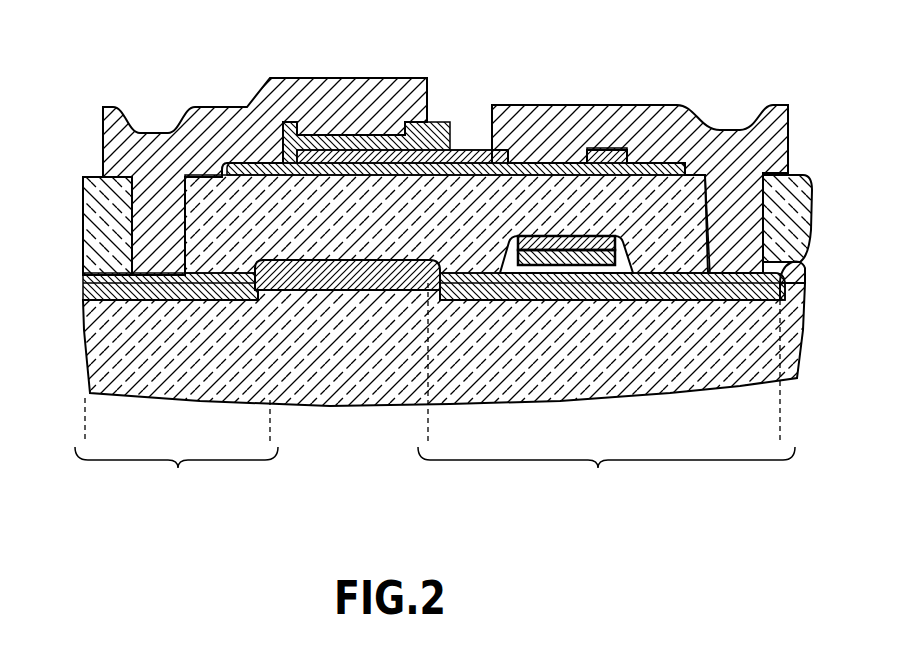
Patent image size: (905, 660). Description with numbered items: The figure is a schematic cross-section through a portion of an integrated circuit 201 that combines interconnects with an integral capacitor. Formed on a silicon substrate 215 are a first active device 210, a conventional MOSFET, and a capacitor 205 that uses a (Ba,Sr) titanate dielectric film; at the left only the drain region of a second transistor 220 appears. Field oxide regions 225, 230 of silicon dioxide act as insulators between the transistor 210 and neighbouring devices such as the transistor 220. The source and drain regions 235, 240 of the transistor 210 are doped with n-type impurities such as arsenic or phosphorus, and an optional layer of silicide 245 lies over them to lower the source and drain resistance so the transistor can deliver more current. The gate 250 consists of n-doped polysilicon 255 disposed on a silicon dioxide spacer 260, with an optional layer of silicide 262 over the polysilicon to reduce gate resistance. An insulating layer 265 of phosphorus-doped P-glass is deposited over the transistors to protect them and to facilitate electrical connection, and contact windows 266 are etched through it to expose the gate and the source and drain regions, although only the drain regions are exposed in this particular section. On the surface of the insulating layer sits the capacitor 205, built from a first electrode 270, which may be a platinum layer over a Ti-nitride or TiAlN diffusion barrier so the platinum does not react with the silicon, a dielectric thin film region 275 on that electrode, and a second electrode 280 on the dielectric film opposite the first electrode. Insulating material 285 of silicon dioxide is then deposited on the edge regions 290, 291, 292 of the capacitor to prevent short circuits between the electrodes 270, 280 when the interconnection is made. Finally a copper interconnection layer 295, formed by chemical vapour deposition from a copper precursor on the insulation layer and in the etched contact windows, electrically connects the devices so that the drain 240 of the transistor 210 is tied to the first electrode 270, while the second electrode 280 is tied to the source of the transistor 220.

The integrated circuit 201 is at (449, 264).
The capacitor 205 is at (304, 262).
The first active device 210 is at (606, 393).
The substrate 215 is at (805, 340).
The second transistor 220 is at (176, 450).
The field oxide region 225 is at (253, 292).
The field oxide region 230 is at (805, 268).
The source region 235 is at (440, 300).
The drain region 240 is at (678, 300).
The silicide layer 245 is at (105, 317).
The gate 250 is at (554, 236).
The gate polysilicon 255 is at (557, 267).
The SiO2 spacer 260 is at (595, 255).
The silicide layer 262 is at (521, 265).
The insulating layer 265 is at (693, 190).
The contact window 266 is at (773, 100).
The first electrode 270 is at (537, 127).
The dielectric thin film region 275 is at (397, 135).
The second electrode 280 is at (342, 133).
The insulating material 285 is at (450, 148).
The edge region 290 is at (297, 110).
The edge region 291 is at (480, 147).
The edge region 292 is at (670, 160).
The copper interconnection layer 295 is at (790, 123).